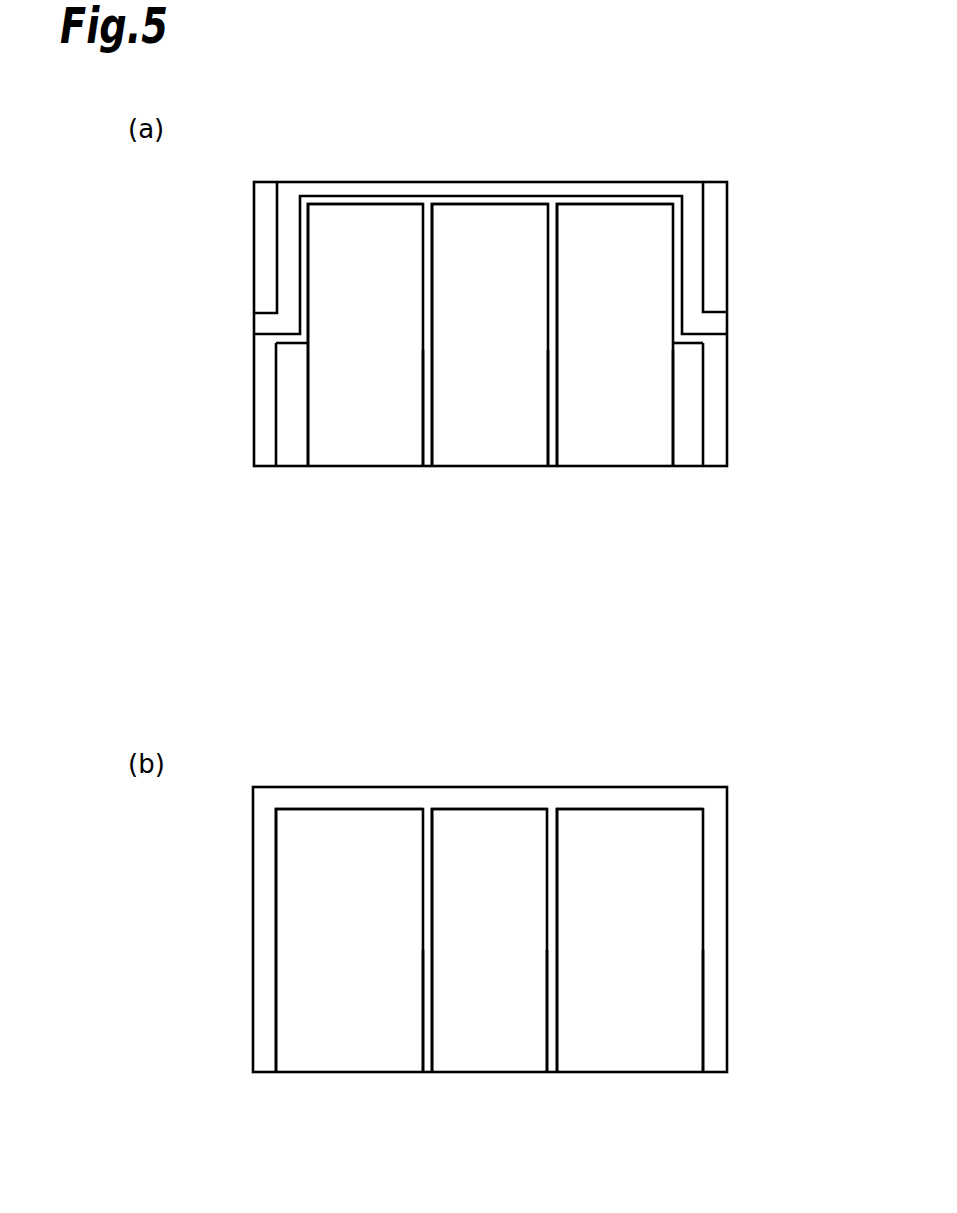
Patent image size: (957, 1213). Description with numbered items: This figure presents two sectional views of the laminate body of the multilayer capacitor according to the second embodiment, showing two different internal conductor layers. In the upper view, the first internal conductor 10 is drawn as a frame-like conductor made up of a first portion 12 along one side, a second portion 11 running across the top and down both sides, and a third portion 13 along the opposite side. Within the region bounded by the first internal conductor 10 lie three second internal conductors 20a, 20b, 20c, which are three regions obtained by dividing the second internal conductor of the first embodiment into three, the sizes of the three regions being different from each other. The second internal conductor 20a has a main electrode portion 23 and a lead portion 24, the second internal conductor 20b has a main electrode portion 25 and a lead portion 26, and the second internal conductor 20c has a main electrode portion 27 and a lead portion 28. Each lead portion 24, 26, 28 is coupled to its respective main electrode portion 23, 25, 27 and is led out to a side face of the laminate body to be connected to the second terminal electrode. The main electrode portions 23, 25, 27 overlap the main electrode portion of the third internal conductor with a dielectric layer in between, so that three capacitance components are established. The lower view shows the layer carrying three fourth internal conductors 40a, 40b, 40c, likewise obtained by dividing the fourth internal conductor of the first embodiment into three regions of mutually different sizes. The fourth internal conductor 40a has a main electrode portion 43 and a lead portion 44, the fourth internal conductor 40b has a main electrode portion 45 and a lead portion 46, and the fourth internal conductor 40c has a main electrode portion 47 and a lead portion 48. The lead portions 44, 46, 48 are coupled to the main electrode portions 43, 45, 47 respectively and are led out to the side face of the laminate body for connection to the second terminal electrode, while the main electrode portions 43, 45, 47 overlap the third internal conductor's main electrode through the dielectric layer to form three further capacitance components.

The first internal conductor 10 is at (450, 324).
The second portion 11 is at (500, 190).
The first portion 12 is at (286, 249).
The third portion 13 is at (690, 252).
The second internal conductor 20a is at (403, 533).
The second internal conductor 20b is at (528, 533).
The second internal conductor 20c is at (667, 533).
The main electrode portion 23 is at (343, 333).
The lead portion 24 is at (386, 446).
The main electrode portion 25 is at (470, 331).
The lead portion 26 is at (510, 446).
The main electrode portion 27 is at (606, 331).
The lead portion 28 is at (648, 446).
The fourth internal conductor 40a is at (403, 1145).
The fourth internal conductor 40b is at (528, 1145).
The fourth internal conductor 40c is at (667, 1145).
The main electrode portion 43 is at (343, 943).
The lead portion 44 is at (386, 1058).
The main electrode portion 45 is at (469, 943).
The lead portion 46 is at (510, 1058).
The main electrode portion 47 is at (606, 942).
The lead portion 48 is at (648, 1058).